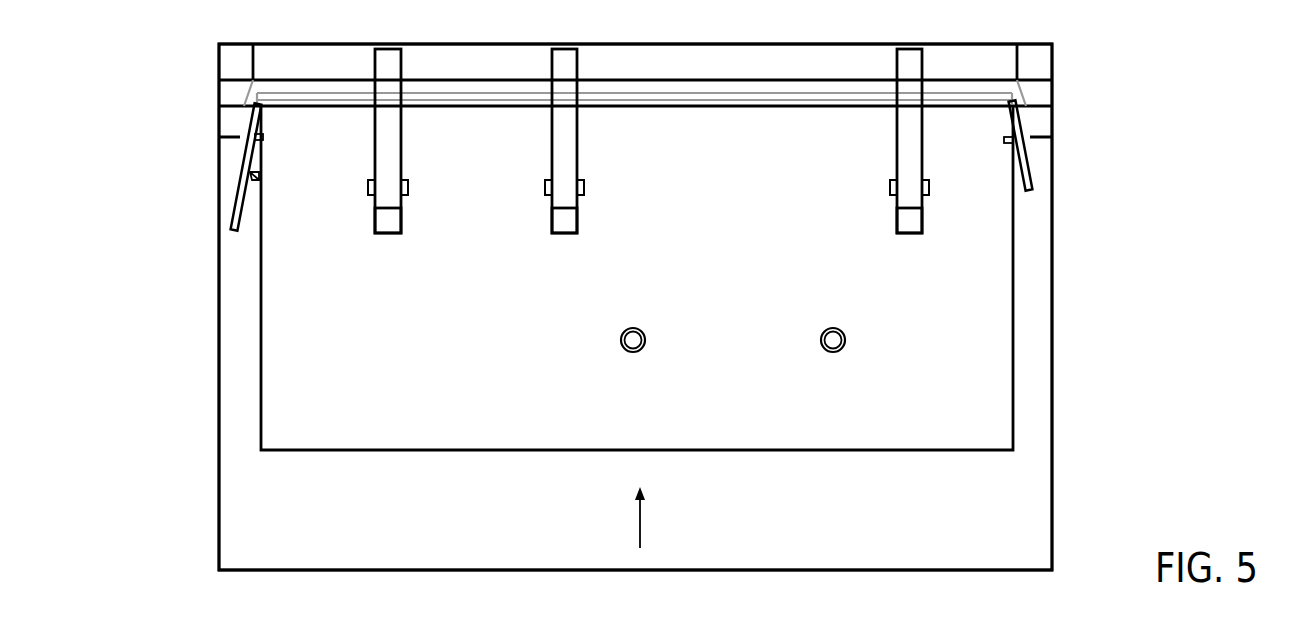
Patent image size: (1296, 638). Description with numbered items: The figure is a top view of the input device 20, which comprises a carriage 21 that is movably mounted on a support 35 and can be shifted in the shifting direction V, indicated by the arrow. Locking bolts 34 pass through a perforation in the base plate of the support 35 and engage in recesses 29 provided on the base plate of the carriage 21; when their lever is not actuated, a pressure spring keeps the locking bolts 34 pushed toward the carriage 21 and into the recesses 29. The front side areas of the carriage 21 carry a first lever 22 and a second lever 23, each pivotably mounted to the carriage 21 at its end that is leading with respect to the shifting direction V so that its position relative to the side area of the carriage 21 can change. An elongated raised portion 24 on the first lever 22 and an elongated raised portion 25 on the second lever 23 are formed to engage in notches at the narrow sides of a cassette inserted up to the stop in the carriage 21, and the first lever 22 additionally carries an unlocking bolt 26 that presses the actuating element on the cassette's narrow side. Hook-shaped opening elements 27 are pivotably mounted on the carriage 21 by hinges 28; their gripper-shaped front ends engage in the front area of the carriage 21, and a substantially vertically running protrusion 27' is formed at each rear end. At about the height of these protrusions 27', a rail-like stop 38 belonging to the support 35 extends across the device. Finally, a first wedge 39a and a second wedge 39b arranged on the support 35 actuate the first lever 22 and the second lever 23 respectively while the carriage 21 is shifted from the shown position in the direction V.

The input device 20 is at (110, 108).
The carriage 21 is at (261, 330).
The first lever 22 is at (233, 218).
The second lever 23 is at (1036, 185).
The elongated raised portion 24 is at (263, 144).
The elongated raised portion 25 is at (1004, 142).
The unlocking bolt 26 is at (259, 180).
The hook-shaped opening element 27 is at (648, 141).
The vertically running protrusion 27' is at (648, 248).
The hinge 28 is at (408, 190).
The recess 29 is at (641, 334).
The locking bolt 34 is at (636, 340).
The support 35 is at (219, 452).
The rail-like stop 38 is at (232, 97).
The first wedge 39a is at (232, 65).
The second wedge 39b is at (1040, 52).